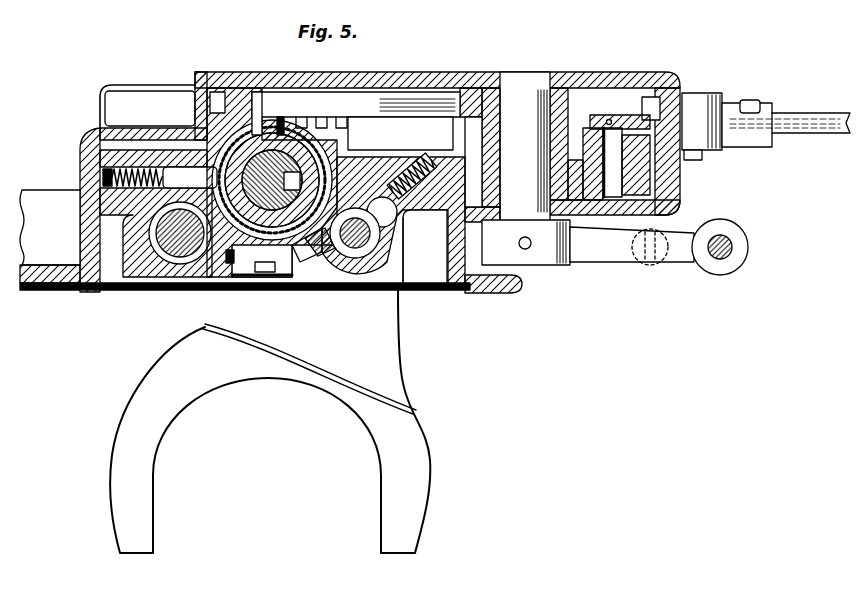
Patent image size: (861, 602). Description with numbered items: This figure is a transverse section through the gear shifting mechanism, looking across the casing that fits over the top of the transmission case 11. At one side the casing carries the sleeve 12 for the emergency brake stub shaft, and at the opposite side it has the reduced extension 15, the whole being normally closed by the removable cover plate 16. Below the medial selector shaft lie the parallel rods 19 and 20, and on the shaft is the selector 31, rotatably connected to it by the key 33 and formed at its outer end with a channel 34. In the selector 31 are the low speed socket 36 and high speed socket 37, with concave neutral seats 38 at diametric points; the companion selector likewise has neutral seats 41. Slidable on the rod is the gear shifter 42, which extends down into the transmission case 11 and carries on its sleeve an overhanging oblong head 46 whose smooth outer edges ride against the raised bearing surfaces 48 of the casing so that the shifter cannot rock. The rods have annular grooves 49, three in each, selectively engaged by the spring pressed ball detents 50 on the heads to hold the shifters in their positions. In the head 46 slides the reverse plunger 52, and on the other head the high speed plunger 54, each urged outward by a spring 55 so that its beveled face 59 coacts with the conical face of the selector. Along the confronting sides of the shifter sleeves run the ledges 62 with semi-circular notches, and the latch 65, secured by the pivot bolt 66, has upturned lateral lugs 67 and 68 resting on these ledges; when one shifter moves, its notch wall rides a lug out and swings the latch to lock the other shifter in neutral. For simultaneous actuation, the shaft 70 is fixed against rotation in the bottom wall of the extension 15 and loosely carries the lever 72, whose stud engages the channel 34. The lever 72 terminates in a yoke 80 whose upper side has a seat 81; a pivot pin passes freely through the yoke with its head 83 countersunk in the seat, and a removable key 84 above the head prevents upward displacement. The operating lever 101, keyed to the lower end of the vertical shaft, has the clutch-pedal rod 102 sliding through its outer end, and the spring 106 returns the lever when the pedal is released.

The transmission case 11 is at (289, 121).
The sleeve 12 is at (50, 236).
The reduced extension 15 is at (682, 196).
The cover plate 16 is at (600, 74).
The rod 19 is at (398, 252).
The rod 20 is at (160, 273).
The selector 31 is at (246, 151).
The key 33 is at (306, 184).
The channel 34 is at (326, 128).
The low speed socket 36 is at (303, 248).
The high speed socket 37 is at (243, 162).
The neutral seat 38 is at (228, 252).
The neutral seat 41 is at (136, 142).
The gear shifter 42 is at (395, 367).
The oblong head 46 is at (393, 220).
The raised bearing surface 48 is at (81, 160).
The annular groove 49 is at (400, 285).
The spring pressed ball detent 50 is at (425, 248).
The reverse plunger 52 is at (605, 194).
The high speed plunger 54 is at (176, 152).
The spring 55 is at (122, 196).
The beveled face 59 is at (190, 177).
The ledge 62 is at (323, 252).
The latch 65 is at (304, 258).
The pivot bolt 66 is at (279, 268).
The lateral lug 67 is at (348, 262).
The lateral lug 68 is at (207, 252).
The shaft 70 is at (525, 147).
The lever 72 is at (432, 88).
The yoke 80 is at (587, 125).
The seat 81 is at (612, 128).
The head 83 is at (640, 135).
The key 84 is at (609, 116).
The operating lever 101 is at (618, 254).
The rod 102 is at (730, 244).
The spring 106 is at (656, 265).